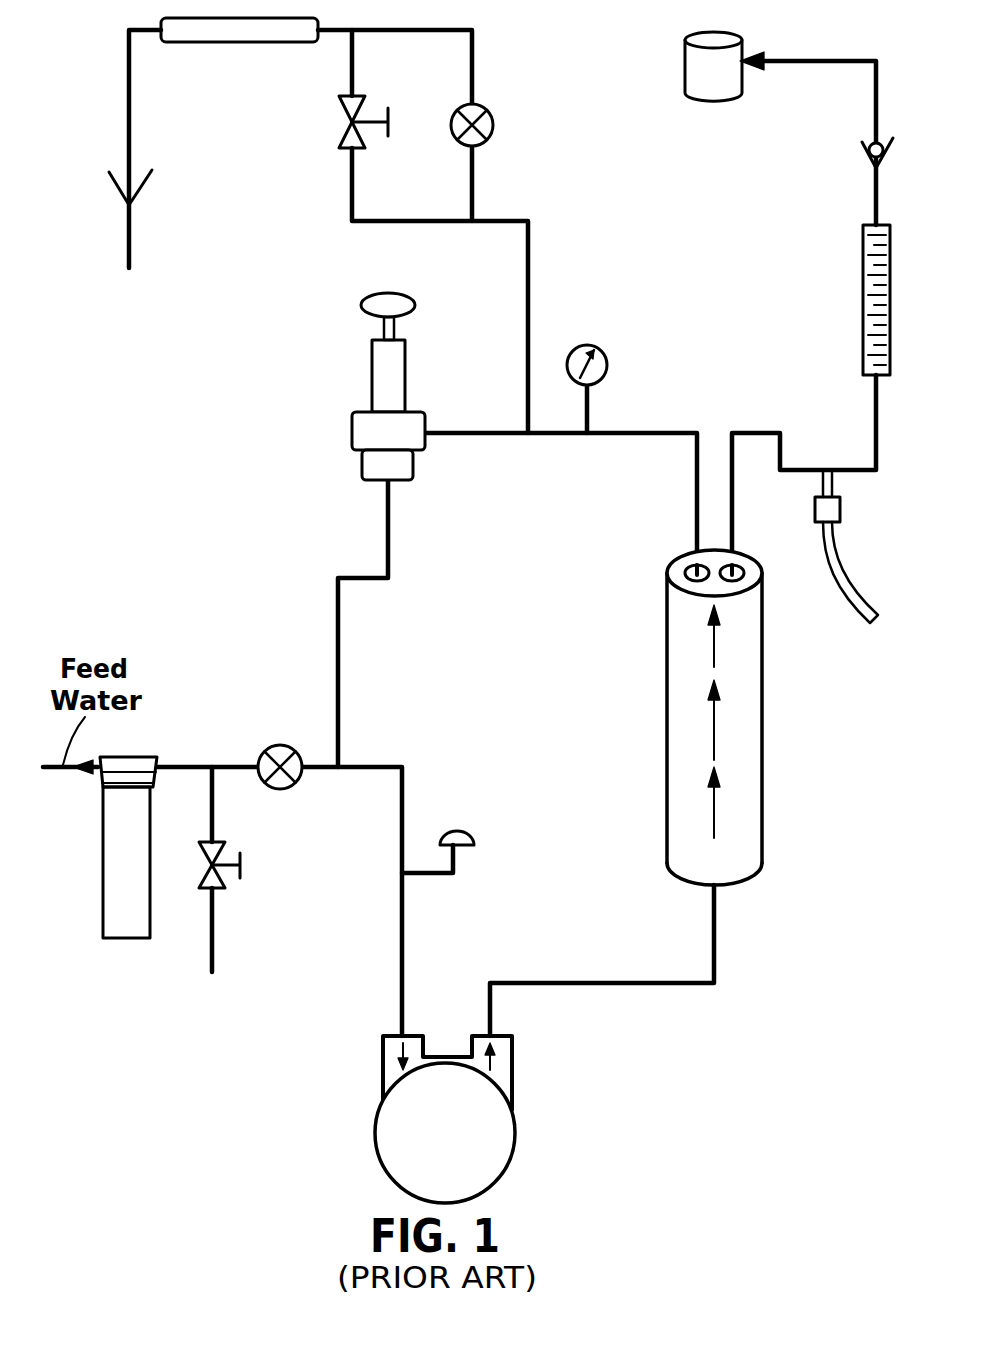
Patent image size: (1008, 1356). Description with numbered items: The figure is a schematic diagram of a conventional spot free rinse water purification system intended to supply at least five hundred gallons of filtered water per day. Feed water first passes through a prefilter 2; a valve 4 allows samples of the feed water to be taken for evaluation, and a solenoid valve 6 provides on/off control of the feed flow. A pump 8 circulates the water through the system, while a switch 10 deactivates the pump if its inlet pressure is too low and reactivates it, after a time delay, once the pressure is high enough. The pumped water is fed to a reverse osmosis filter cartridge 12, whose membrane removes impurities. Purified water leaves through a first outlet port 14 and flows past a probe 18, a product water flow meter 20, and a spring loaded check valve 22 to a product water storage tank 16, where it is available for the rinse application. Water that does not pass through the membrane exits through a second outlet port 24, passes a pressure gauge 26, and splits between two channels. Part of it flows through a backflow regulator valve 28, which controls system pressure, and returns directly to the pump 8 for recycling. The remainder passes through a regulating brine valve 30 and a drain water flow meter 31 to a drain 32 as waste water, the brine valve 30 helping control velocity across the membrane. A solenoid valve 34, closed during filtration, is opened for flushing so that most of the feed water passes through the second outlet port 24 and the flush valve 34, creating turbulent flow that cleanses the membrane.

The prefilter 2 is at (126, 922).
The valve 4 is at (215, 890).
The solenoid valve 6 is at (283, 743).
The pump 8 is at (515, 1133).
The switch 10 is at (460, 832).
The reverse osmosis filter cartridge 12 is at (763, 720).
The first outlet port 14 is at (755, 555).
The product water storage tank 16 is at (690, 65).
The probe 18 is at (840, 505).
The product water flow meter 20 is at (863, 295).
The spring loaded check valve 22 is at (865, 160).
The second outlet port 24 is at (680, 560).
The pressure gauge 26 is at (600, 345).
The backflow regulator valve 28 is at (378, 370).
The regulating brine valve 30 is at (345, 135).
The drain water flow meter 31 is at (232, 45).
The drain 32 is at (135, 200).
The solenoid valve 34 is at (493, 118).